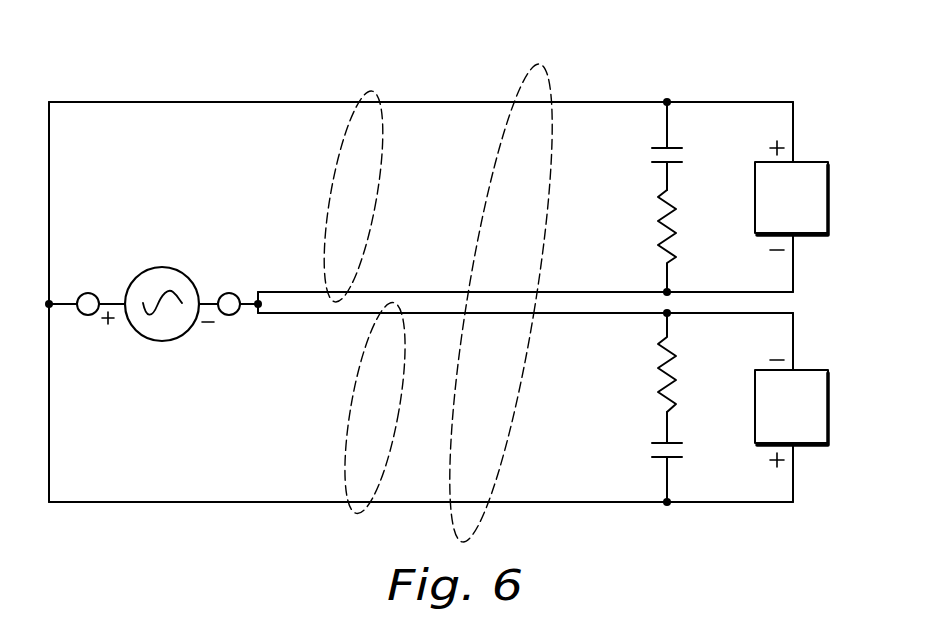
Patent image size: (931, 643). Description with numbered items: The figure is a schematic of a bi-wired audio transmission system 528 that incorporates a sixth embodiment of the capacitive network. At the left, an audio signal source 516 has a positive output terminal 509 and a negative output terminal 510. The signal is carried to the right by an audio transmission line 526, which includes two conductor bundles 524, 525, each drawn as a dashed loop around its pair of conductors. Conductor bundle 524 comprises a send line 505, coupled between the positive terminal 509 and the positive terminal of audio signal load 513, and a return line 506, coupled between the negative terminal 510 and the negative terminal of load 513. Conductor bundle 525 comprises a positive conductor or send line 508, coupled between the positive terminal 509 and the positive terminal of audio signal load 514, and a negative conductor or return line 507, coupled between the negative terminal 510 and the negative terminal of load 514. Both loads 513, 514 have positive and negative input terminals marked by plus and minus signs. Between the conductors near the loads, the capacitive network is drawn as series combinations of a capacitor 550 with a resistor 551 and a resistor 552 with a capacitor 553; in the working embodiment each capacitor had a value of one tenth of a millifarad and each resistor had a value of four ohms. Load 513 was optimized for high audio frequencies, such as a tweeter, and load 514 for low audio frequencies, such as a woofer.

The send line 505 is at (573, 102).
The return line 506 is at (434, 290).
The negative conductor or return line 507 is at (550, 314).
The positive conductor or send line 508 is at (588, 502).
The positive output terminal 509 is at (85, 293).
The negative output terminal 510 is at (232, 293).
The audio signal load 513 is at (805, 233).
The audio signal load 514 is at (805, 443).
The audio signal source 516 is at (162, 341).
The conductor bundle 524 is at (345, 142).
The conductor bundle 525 is at (357, 388).
The audio transmission line 526 is at (500, 148).
The bi-wired audio transmission system 528 is at (807, 133).
The capacitor 550 is at (675, 143).
The resistor 551 is at (660, 238).
The resistor 552 is at (657, 368).
The capacitor 553 is at (652, 445).